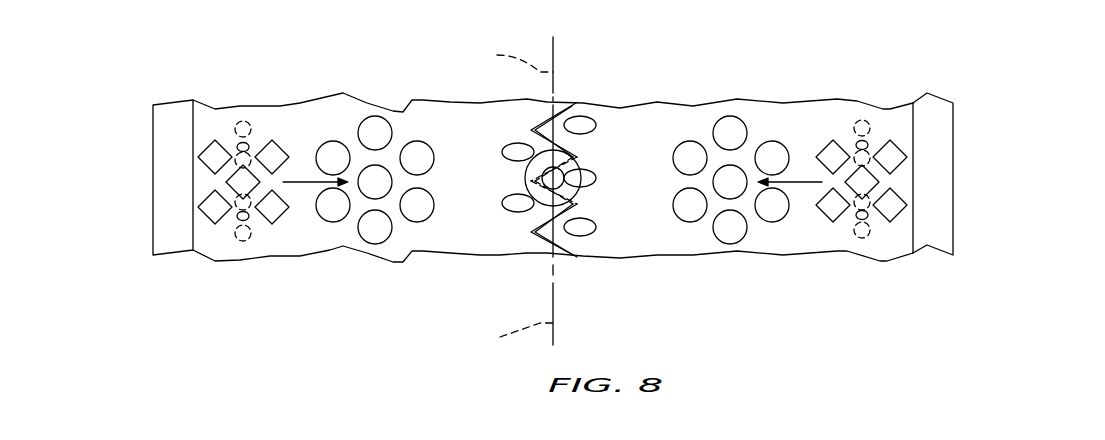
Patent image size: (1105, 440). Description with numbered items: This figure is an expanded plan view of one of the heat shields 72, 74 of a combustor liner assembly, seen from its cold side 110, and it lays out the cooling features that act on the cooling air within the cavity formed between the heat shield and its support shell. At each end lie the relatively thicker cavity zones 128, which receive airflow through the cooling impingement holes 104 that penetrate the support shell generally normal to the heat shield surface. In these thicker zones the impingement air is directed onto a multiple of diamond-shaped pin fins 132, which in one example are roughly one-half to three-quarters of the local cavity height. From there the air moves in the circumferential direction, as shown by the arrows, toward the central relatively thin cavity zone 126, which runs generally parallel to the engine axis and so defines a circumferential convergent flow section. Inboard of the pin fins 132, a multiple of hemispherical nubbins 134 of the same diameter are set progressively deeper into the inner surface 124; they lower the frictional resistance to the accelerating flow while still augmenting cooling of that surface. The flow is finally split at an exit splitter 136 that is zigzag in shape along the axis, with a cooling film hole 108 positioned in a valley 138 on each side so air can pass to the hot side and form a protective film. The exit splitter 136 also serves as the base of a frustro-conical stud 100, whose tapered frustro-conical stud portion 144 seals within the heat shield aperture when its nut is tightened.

The heat shield 72 is at (627, 177).
The heat shield 74 is at (553, 174).
The frustro-conical stud 100 is at (590, 160).
The cooling impingement holes 104 is at (237, 115).
The cooling film holes 108 is at (248, 147).
The cold side 110 is at (798, 118).
The inner surface 124 is at (623, 232).
The relatively thin cavity zone 126 is at (558, 292).
The relatively thicker cavity zones 128 is at (242, 273).
The pin fins 132 is at (279, 151).
The hemispherical nubbins 134 is at (370, 133).
The exit splitter 136 is at (540, 115).
The valley 138 is at (570, 127).
The frustro-conical stud portion 144 is at (527, 170).